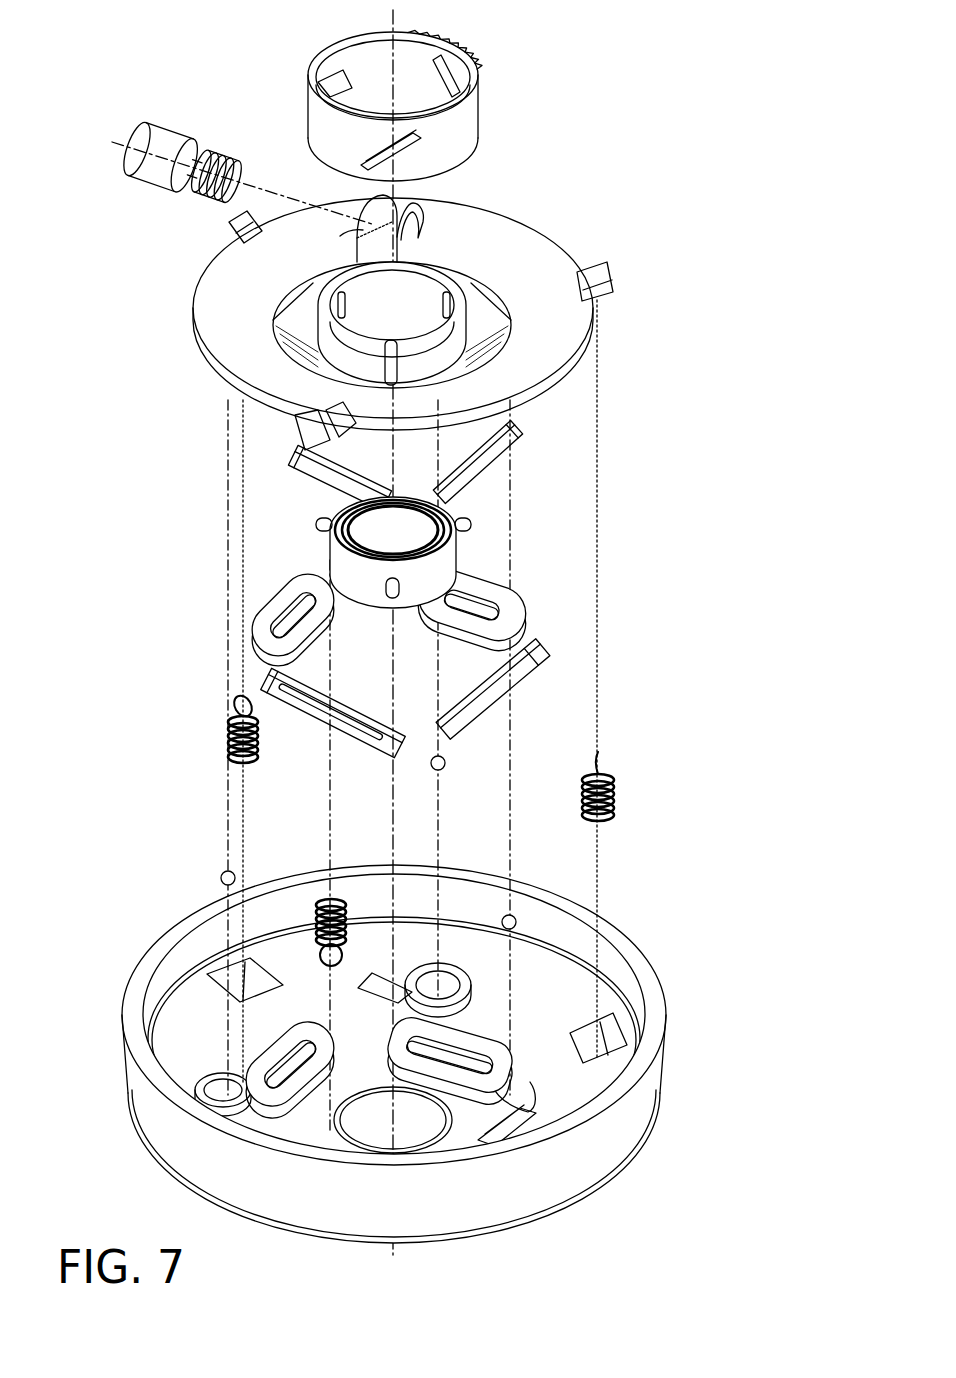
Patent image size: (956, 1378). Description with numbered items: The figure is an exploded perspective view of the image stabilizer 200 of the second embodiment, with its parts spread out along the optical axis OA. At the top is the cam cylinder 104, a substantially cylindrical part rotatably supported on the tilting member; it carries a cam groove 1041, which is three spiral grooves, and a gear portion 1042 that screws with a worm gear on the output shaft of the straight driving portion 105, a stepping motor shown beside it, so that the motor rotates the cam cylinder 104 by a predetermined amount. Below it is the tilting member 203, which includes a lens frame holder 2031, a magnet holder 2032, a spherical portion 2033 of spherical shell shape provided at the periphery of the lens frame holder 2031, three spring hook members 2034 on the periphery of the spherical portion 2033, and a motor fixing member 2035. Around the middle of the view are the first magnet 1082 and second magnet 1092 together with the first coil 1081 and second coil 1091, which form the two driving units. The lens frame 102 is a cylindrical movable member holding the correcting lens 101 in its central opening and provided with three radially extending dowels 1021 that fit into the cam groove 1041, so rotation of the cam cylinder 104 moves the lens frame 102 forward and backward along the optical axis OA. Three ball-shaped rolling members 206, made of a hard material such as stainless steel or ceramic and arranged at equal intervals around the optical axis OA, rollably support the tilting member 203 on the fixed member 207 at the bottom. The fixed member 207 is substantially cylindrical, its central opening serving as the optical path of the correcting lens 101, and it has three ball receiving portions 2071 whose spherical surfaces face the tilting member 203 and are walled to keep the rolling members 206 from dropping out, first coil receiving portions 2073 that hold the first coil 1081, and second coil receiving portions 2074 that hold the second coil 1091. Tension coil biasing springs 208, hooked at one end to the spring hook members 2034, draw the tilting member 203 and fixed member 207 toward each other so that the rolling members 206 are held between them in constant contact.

The optical axis OA is at (390, 190).
The image stabilizer 200 is at (547, 111).
The cam cylinder 104 is at (402, 98).
The cam groove 1041 is at (340, 80).
The gear portion 1042 is at (432, 40).
The straight driving portion 105 is at (157, 135).
The tilting member 203 is at (386, 316).
The lens frame holder 2031 is at (415, 278).
The magnet holder 2032 is at (297, 317).
The spherical portion 2033 is at (567, 337).
The spring hook member 2034 is at (228, 225).
The motor fixing member 2035 is at (363, 232).
The second magnet 1092 is at (317, 472).
The first magnet 1082 is at (487, 460).
The first coil 1081 is at (287, 597).
The second coil 1091 is at (493, 617).
The lens frame 102 is at (416, 549).
The correcting lens 101 is at (420, 520).
The dowels 1021 is at (317, 523).
The biasing spring 208 is at (227, 737).
The rolling member 206 is at (445, 763).
The fixed member 207 is at (371, 1035).
The ball receiving portion 2071 is at (446, 965).
The first coil receiving portion 2073 is at (495, 1040).
The second coil receiving portion 2074 is at (263, 1061).